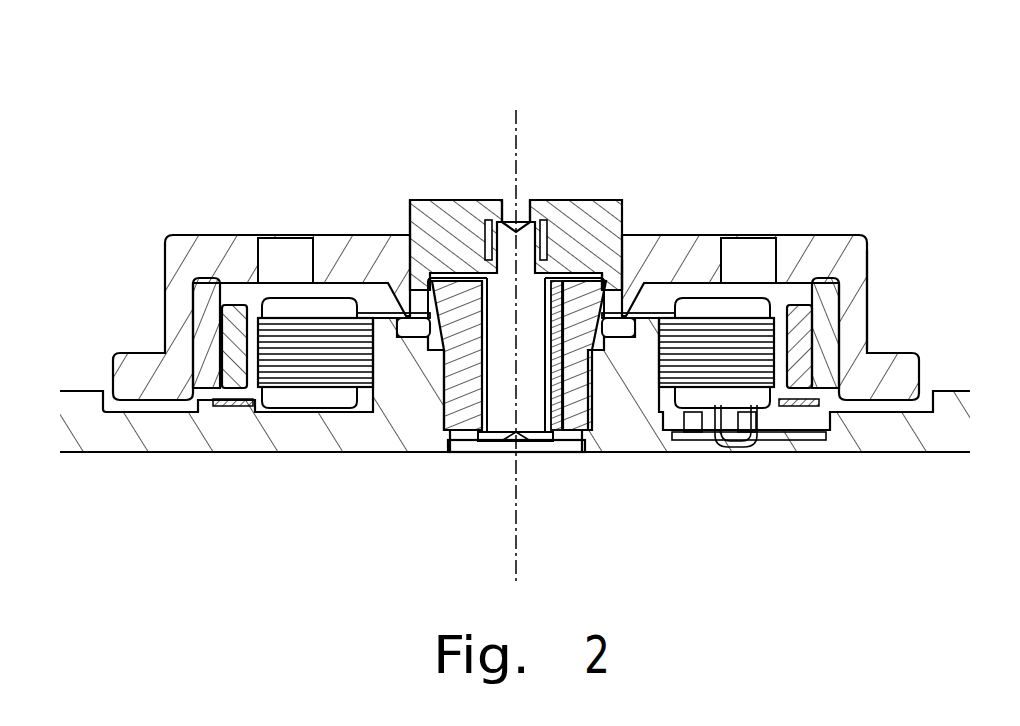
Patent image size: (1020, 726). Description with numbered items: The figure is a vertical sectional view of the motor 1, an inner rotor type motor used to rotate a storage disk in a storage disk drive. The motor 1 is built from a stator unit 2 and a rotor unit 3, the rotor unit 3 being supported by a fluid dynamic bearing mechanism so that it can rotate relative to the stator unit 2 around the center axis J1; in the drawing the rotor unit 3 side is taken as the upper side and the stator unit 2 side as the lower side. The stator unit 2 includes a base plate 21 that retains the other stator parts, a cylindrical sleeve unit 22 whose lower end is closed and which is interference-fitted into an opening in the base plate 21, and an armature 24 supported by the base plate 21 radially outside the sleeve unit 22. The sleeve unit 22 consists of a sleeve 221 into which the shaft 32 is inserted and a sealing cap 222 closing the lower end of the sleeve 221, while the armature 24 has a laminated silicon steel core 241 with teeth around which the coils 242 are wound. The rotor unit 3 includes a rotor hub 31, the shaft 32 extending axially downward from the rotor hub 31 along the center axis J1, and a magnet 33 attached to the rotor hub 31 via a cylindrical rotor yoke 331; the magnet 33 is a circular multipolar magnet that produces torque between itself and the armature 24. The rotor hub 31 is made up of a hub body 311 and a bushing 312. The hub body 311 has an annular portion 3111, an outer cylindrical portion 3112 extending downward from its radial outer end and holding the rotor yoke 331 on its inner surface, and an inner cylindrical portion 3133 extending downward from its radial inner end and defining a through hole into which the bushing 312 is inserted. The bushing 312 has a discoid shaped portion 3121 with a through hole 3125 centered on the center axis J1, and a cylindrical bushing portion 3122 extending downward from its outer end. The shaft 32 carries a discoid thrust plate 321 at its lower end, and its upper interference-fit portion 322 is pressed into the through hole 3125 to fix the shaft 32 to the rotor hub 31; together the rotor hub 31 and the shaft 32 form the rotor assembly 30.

The motor 1 is at (162, 172).
The stator unit 2 is at (166, 563).
The rotor unit 3 is at (866, 112).
The base plate 21 is at (163, 432).
The sleeve unit 22 is at (412, 510).
The armature 24 is at (257, 518).
The rotor assembly 30 is at (585, 70).
The rotor hub 31 is at (667, 122).
The shaft 32 is at (524, 218).
The magnet 33 is at (818, 350).
The sleeve 221 is at (457, 405).
The sealing cap 222 is at (478, 448).
The core 241 is at (318, 370).
The coils 242 is at (287, 397).
The hub body 311 is at (838, 226).
The bushing 312 is at (604, 214).
The thrust plate 321 is at (553, 447).
The interference-fit portion 322 is at (410, 216).
The rotor yoke 331 is at (801, 378).
The annular portion 3111 is at (791, 243).
The outer cylindrical portion 3112 is at (860, 318).
The discoid shaped portion 3121 is at (580, 213).
The cylindrical bushing portion 3122 is at (628, 290).
The through hole 3125 is at (500, 197).
The inner cylindrical portion 3133 is at (640, 305).
The center axis J1 is at (514, 118).